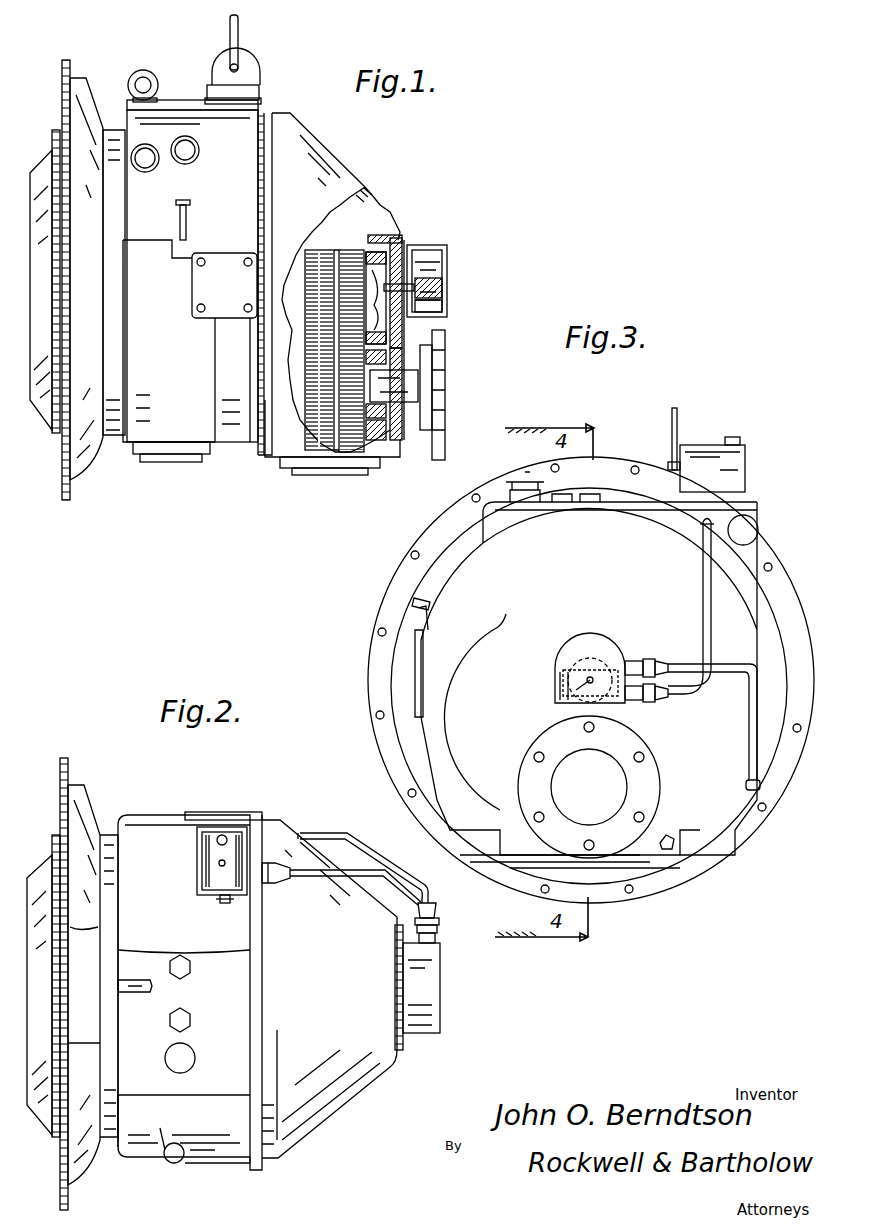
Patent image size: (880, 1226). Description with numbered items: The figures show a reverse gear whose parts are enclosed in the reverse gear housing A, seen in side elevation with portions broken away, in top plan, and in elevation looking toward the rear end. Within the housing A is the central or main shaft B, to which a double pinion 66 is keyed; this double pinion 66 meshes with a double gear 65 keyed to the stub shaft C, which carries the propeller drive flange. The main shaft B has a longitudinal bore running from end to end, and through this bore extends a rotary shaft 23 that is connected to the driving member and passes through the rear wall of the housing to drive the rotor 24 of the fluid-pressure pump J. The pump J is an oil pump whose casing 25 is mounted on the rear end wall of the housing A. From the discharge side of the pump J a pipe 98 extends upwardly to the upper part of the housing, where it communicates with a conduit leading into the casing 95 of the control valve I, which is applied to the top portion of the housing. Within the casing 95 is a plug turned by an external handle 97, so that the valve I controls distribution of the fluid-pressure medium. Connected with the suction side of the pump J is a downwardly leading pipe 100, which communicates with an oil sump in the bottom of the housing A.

In FIG. 1, the reverse gear housing A is at (235, 437).
In FIG. 3, the reverse gear housing A is at (485, 546).
In FIG. 2, the reverse gear housing A is at (138, 840).
In FIG. 1, the casing 95 is at (211, 86).
In FIG. 3, the casing 95 is at (742, 445).
In FIG. 2, the casing 95 is at (208, 852).
In FIG. 1, the external handle 97 is at (230, 27).
In FIG. 3, the external handle 97 is at (678, 425).
In FIG. 2, the external handle 97 is at (225, 903).
In FIG. 1, the control valve I is at (245, 73).
In FIG. 3, the control valve I is at (735, 468).
In FIG. 2, the control valve I is at (215, 878).
In FIG. 1, the double pinion 66 is at (320, 262).
In FIG. 1, the double gear 65 is at (325, 418).
In FIG. 1, the central shaft or main shaft B is at (372, 290).
In FIG. 1, the rotary shaft 23 is at (408, 258).
In FIG. 3, the rotary shaft 23 is at (560, 690).
In FIG. 1, the fluid-pressure pump J is at (450, 260).
In FIG. 3, the fluid-pressure pump J is at (590, 646).
In FIG. 2, the fluid-pressure pump J is at (430, 988).
In FIG. 1, the rotor 24 is at (432, 286).
In FIG. 3, the rotor 24 is at (605, 658).
In FIG. 1, the casing 25 is at (440, 310).
In FIG. 3, the casing 25 is at (556, 670).
In FIG. 2, the casing 25 is at (433, 966).
In FIG. 1, the stub shaft C is at (400, 383).
In FIG. 3, the pipe 98 is at (702, 573).
In FIG. 2, the pipe 98 is at (313, 878).
In FIG. 3, the pipe 100 is at (752, 692).
In FIG. 2, the pipe 100 is at (353, 833).